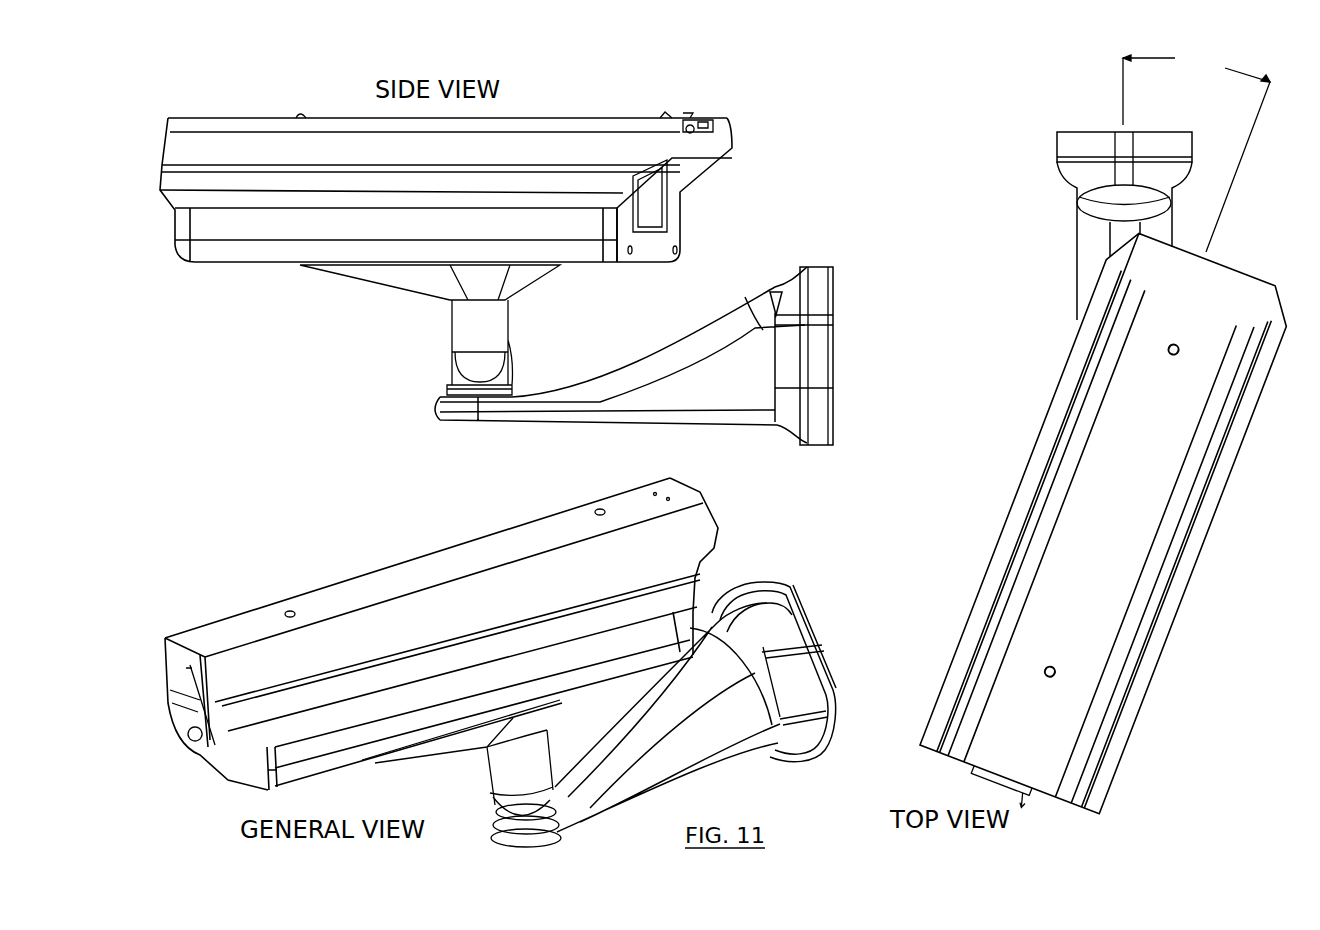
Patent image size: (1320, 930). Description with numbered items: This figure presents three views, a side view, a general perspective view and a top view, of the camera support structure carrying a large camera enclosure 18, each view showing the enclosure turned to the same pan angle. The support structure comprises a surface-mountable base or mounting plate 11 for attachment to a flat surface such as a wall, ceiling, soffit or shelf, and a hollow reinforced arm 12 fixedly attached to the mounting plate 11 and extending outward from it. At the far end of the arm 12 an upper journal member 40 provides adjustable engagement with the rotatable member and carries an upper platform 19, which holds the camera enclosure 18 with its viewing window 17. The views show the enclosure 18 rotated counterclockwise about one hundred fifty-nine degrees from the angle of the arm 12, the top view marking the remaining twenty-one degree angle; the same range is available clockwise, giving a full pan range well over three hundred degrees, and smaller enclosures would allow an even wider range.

The mounting plate 11 is at (822, 284).
The arm 12 is at (722, 411).
The viewing window 17 is at (652, 200).
The camera enclosure 18 is at (528, 145).
The upper platform 19 is at (395, 282).
The upper journal member 40 is at (485, 328).